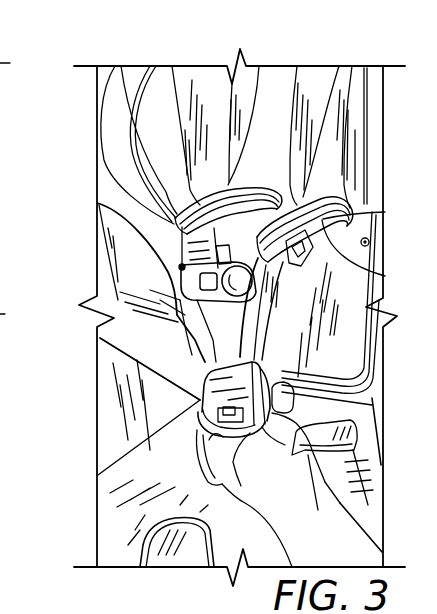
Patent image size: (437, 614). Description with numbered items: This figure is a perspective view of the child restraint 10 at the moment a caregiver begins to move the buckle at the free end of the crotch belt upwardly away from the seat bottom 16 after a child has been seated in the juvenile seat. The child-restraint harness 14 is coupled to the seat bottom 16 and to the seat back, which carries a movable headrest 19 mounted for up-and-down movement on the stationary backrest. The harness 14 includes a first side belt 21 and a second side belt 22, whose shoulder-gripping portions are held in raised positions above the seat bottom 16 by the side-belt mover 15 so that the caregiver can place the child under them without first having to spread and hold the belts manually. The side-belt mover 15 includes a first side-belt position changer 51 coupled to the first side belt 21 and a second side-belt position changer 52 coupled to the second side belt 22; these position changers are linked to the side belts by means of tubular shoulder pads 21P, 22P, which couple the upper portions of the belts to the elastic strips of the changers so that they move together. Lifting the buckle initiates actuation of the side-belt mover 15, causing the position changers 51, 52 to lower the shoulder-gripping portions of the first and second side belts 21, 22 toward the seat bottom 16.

The child restraint 10 is at (72, 68).
The child-restraint harness 14 is at (290, 366).
The side-belt mover 15 is at (417, 252).
The seat bottom 16 is at (126, 500).
The movable headrest 19 is at (127, 137).
The first side belt 21 is at (338, 66).
The tubular shoulder pad 21P is at (297, 66).
The second side belt 22 is at (172, 66).
The tubular shoulder pad 22P is at (121, 66).
The first side-belt position changer 51 is at (372, 274).
The second side-belt position changer 52 is at (258, 66).